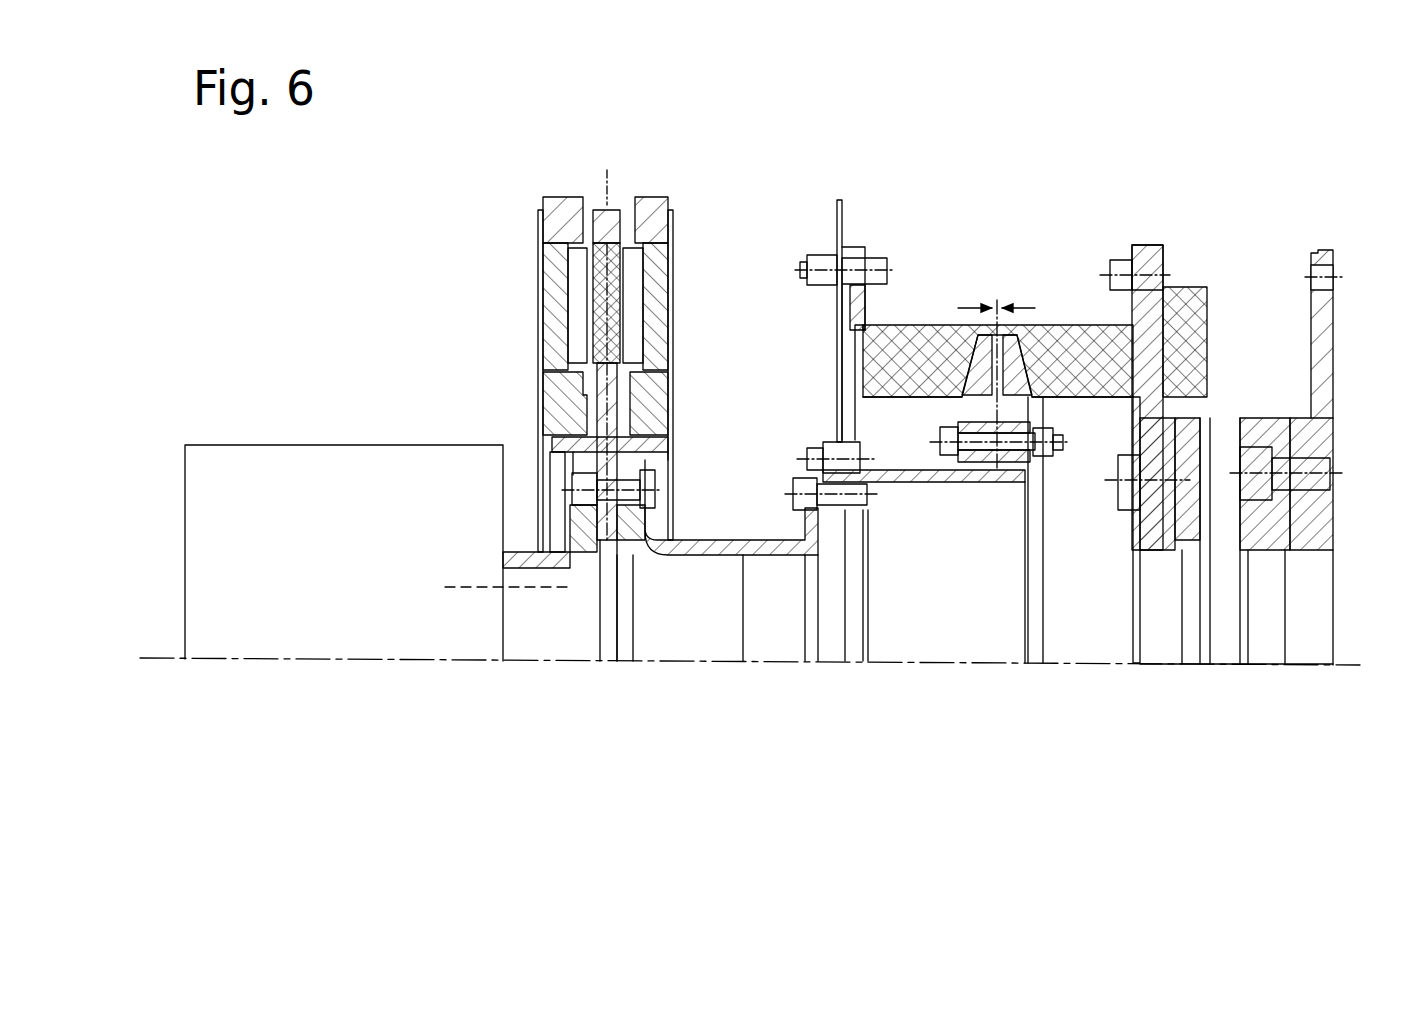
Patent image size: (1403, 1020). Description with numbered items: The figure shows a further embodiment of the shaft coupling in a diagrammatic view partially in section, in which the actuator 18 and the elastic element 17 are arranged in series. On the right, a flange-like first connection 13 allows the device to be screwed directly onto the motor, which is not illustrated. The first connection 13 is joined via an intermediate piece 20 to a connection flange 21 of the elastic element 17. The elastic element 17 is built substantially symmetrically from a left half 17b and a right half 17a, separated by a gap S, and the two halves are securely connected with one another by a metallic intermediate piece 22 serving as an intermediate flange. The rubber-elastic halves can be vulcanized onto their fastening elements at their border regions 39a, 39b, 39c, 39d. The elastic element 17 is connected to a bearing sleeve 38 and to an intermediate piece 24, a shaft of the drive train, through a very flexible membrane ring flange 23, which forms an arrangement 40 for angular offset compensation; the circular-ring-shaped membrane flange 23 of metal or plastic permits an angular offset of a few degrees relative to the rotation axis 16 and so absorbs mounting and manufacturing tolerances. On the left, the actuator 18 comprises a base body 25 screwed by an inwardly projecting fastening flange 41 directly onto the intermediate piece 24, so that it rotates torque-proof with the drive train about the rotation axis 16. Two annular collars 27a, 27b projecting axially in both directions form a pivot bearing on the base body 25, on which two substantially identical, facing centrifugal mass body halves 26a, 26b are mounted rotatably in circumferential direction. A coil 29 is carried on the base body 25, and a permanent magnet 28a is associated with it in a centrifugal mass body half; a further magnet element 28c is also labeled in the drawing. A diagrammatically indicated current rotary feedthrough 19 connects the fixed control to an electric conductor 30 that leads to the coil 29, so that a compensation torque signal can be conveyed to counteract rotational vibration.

The first connection 13 is at (1325, 310).
The rotation axis 16 is at (1270, 665).
The elastic element 17 is at (998, 232).
The right half of elastic element 17a is at (1102, 320).
The left half of elastic element 17b is at (915, 320).
The actuator 18 is at (622, 188).
The current rotary feedthrough 19 is at (305, 440).
The intermediate piece 20 is at (1268, 430).
The connection flange 21 is at (1150, 250).
The intermediate piece 22 is at (993, 458).
The membrane ring flange 23 is at (845, 240).
The intermediate piece 24 is at (730, 560).
The base body 25 is at (580, 505).
The centrifugal mass body half 26a is at (652, 208).
The centrifugal mass body half 26b is at (560, 208).
The annular collar 27a is at (660, 408).
The annular collar 27b is at (560, 415).
The permanent magnet 28a is at (635, 335).
The spacer sleeve 28c is at (576, 328).
The coil 29 is at (618, 290).
The electric conductor 30 is at (568, 590).
The bearing sleeve 38 is at (907, 473).
The border region 39a is at (1100, 400).
The border region 39b is at (1035, 370).
The border region 39c is at (965, 365).
The border region 39d is at (905, 400).
The compensation arrangement 40 is at (835, 395).
The fastening flange 41 is at (605, 460).
The gap S is at (1012, 318).